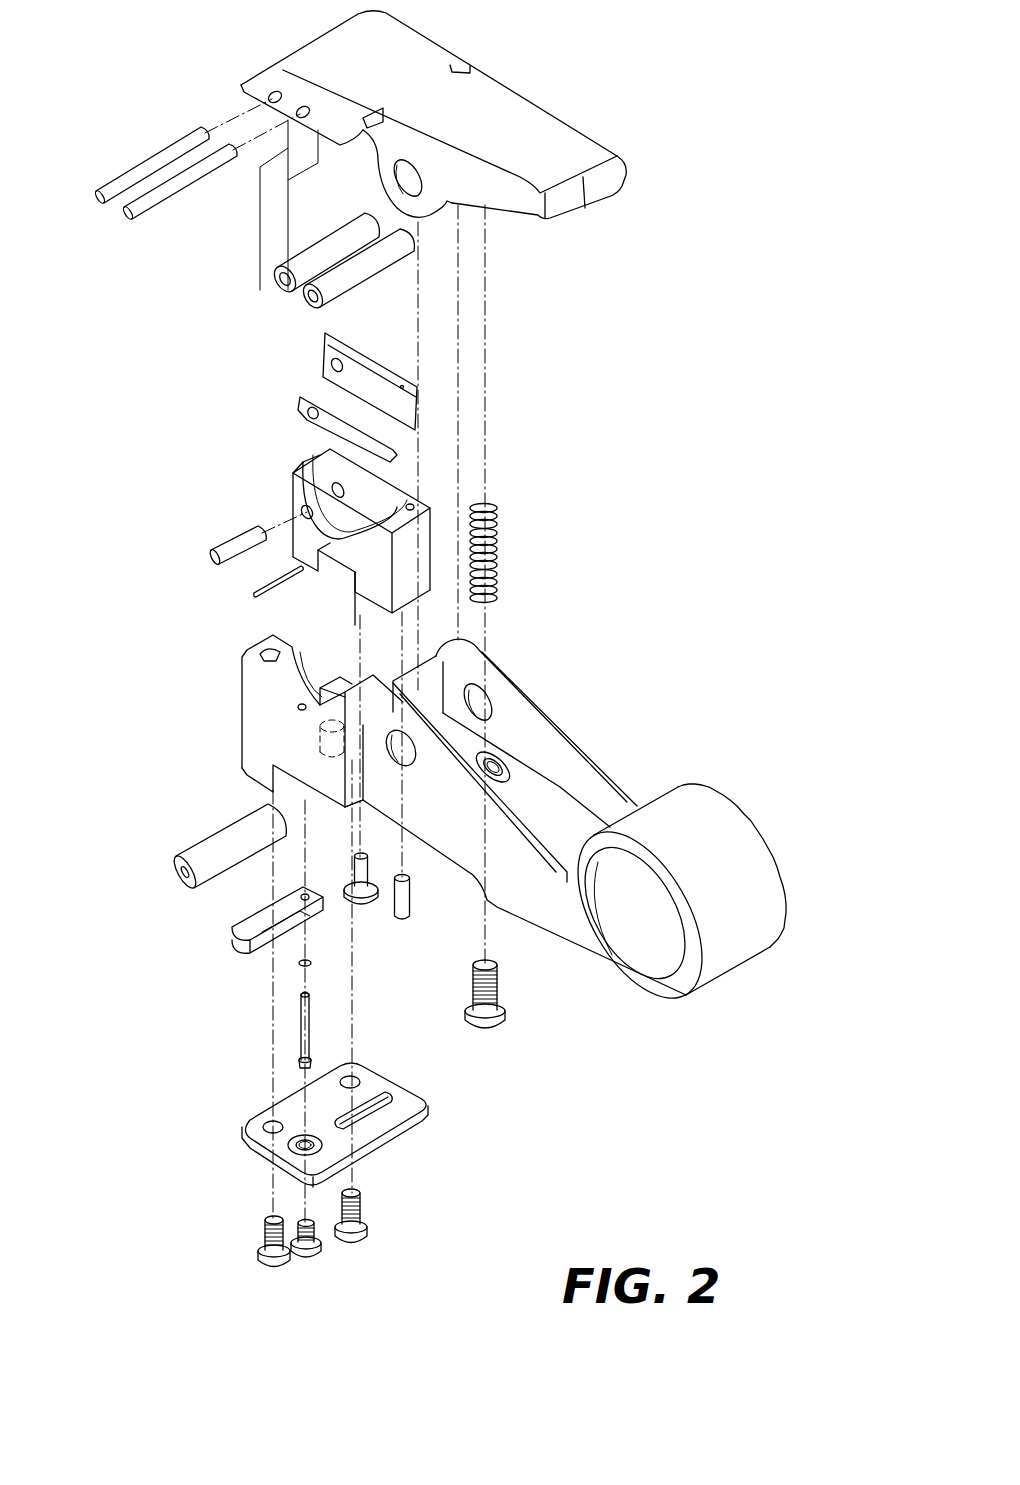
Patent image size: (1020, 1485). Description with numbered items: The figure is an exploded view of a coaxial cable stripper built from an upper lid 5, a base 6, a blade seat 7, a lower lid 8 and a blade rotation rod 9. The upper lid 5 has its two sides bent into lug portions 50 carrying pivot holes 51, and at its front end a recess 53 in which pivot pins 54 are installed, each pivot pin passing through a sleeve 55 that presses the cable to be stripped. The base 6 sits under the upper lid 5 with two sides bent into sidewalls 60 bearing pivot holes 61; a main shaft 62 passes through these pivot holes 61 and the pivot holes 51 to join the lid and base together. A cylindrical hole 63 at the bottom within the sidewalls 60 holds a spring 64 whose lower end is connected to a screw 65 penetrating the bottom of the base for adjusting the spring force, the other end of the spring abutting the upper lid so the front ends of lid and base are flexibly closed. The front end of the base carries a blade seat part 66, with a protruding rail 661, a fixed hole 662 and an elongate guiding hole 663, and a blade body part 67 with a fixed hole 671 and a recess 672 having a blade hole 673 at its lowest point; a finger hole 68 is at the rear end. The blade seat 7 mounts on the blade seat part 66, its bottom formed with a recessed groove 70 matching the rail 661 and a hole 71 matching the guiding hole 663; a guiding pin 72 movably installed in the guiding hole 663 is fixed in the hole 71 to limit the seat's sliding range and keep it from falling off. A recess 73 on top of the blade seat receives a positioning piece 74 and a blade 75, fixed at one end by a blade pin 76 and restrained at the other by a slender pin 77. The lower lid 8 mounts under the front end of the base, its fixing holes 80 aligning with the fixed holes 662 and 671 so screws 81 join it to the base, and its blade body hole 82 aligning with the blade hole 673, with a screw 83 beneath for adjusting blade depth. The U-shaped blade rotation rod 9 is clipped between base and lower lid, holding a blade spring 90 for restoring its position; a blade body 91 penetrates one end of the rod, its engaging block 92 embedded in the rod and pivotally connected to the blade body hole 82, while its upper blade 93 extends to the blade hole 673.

The upper lid 5 is at (408, 124).
The lug portions 50 is at (397, 199).
The pivot holes 51 is at (403, 185).
The recess 53 is at (292, 111).
The pivot pins 54 is at (160, 197).
The sleeve 55 is at (310, 306).
The blade seat 7 is at (205, 447).
The recessed groove 70 is at (352, 527).
The hole 71 is at (305, 500).
The recess 73 is at (312, 457).
The positioning piece 74 is at (335, 354).
The blade 75 is at (302, 408).
The blade pin 76 is at (216, 547).
The slender pin 77 is at (255, 593).
The spring 64 is at (500, 538).
The base 6 is at (668, 682).
The sidewalls 60 is at (565, 849).
The pivot holes 61 is at (400, 762).
The main shaft 62 is at (223, 838).
The cylindrical hole 63 is at (510, 767).
The screw 65 is at (490, 1030).
The blade seat part 66 is at (262, 699).
The protruding rail 661 is at (385, 670).
The fixed hole 662 is at (317, 693).
The elongate guiding hole 663 is at (323, 707).
The blade body part 67 is at (250, 735).
The fixed hole 671 is at (263, 654).
The recess 672 is at (290, 683).
The blade hole 673 is at (300, 710).
The finger hole 68 is at (645, 947).
The guiding pin 72 is at (363, 890).
The blade rotation rod 9 is at (250, 920).
The blade spring 90 is at (300, 966).
The blade body 91 is at (302, 1026).
The engaging block 92 is at (302, 1070).
The blade 93 is at (302, 1002).
The lower lid 8 is at (327, 1182).
The fixing holes 80 is at (352, 1077).
The screws 81 is at (262, 1250).
The blade body hole 82 is at (293, 1145).
The screw 83 is at (312, 1255).